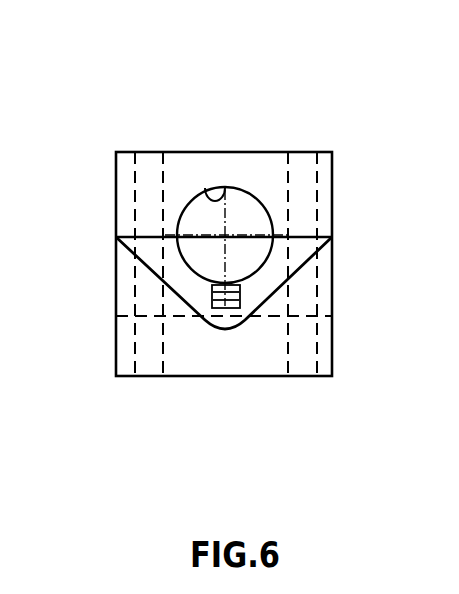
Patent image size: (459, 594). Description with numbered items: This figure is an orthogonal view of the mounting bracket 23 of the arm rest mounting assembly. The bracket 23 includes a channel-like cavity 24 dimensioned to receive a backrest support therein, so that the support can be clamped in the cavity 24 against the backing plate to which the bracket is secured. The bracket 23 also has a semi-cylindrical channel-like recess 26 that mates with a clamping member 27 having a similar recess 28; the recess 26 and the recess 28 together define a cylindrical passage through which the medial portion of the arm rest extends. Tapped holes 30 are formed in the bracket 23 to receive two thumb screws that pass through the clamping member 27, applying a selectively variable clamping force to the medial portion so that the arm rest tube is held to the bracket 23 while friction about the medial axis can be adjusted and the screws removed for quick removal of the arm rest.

The mounting bracket 23 is at (333, 350).
The channel-like cavity 24 is at (180, 323).
The semi-cylindrical channel-like recess 26 is at (242, 283).
The clamping member 27 is at (173, 149).
The recess 28 is at (229, 192).
The tapped holes 30 is at (133, 293).